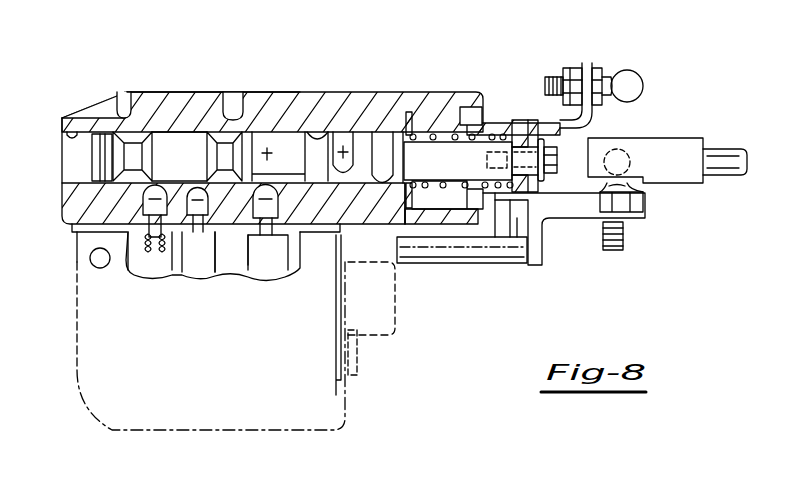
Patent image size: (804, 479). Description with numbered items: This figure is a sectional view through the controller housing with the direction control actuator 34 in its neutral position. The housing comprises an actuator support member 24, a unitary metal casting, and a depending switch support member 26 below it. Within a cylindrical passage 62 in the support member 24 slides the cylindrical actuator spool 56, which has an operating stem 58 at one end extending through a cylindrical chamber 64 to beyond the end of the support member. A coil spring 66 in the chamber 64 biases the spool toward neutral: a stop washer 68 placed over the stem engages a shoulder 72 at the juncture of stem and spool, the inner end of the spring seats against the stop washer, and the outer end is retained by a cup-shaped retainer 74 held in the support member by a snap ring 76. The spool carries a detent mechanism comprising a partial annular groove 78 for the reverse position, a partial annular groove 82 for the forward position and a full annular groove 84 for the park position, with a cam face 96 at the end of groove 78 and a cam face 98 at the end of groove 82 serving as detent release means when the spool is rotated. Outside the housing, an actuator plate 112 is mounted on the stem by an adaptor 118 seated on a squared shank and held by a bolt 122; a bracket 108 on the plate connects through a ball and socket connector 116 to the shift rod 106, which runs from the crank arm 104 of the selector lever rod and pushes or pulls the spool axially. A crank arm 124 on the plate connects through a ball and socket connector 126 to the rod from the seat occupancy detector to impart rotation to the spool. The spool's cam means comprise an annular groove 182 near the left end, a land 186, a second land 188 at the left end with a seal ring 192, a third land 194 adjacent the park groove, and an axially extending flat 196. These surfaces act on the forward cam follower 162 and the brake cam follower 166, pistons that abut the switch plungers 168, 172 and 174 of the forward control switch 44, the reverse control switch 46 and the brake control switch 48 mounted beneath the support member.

The actuator support member 24 is at (276, 62).
The switch support member 26 is at (77, 370).
The direction control actuator 34 is at (511, 126).
The forward control switch 44 is at (167, 274).
The reverse control switch 46 is at (202, 274).
The brake control switch 48 is at (273, 256).
The actuator spool 56 is at (168, 126).
The operating stem 58 is at (448, 132).
The passage 62 is at (71, 130).
The chamber 64 is at (452, 240).
The coil spring 66 is at (434, 132).
The stop washer 68 is at (408, 242).
The shoulder 72 is at (412, 160).
The cup-shaped retainer 74 is at (491, 240).
The snap ring 76 is at (491, 106).
The partial annular groove 78 is at (383, 140).
The partial annular groove 82 is at (350, 134).
The full annular groove 84 is at (320, 140).
The cam face 96 is at (385, 266).
The cam face 98 is at (378, 272).
The crank arm 104 is at (234, 116).
The shift rod 106 is at (672, 138).
The bracket 108 is at (583, 242).
The actuator plate 112 is at (517, 242).
The ball and socket connector 116 is at (677, 182).
The adaptor 118 is at (538, 117).
The bolt 122 is at (562, 226).
The crank arm 124 is at (597, 116).
The ball and socket connector 126 is at (632, 70).
The forward cam follower 162 is at (97, 228).
The brake cam follower 166 is at (301, 212).
The switch plunger 168 is at (127, 272).
The switch plunger 172 is at (224, 276).
The switch plunger 174 is at (246, 272).
The annular groove 182 is at (149, 128).
The land 186 is at (189, 134).
The second land 188 is at (120, 114).
The seal ring 192 is at (66, 220).
The third land 194 is at (305, 135).
The axially extending flat 196 is at (258, 128).